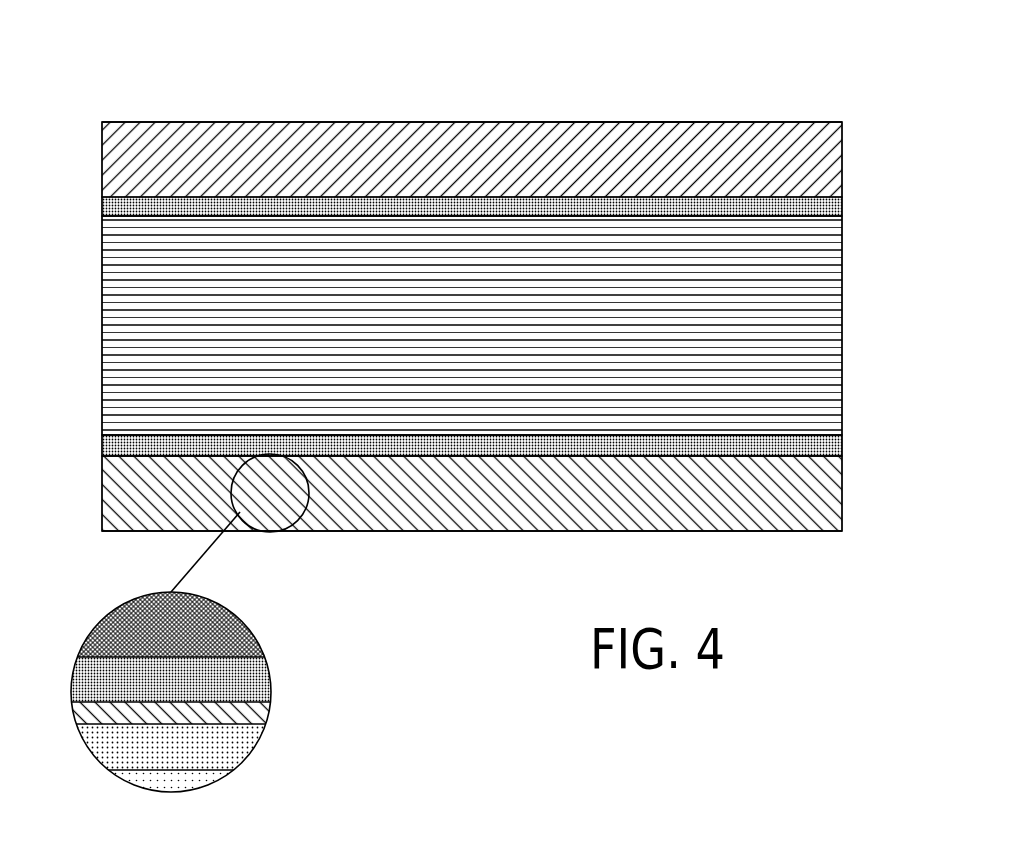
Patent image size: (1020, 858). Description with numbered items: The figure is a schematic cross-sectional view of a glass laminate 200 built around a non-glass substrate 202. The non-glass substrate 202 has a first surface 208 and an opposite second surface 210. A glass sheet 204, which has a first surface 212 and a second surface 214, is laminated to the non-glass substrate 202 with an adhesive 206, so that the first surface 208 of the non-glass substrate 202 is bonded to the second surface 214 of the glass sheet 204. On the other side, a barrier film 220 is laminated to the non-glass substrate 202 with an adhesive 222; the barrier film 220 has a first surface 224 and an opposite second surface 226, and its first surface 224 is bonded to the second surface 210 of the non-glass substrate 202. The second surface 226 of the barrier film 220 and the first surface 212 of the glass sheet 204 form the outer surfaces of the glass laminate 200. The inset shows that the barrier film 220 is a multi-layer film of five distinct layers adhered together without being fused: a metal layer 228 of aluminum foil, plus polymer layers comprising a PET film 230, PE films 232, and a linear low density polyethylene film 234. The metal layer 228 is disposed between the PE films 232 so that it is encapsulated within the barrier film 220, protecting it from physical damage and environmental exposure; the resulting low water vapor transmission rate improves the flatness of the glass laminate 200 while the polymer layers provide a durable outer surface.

The glass laminate 200 is at (450, 266).
The non-glass substrate 202 is at (425, 325).
The glass sheet 204 is at (425, 156).
The adhesive 206 is at (422, 188).
The first surface 208 is at (644, 93).
The second surface 210 is at (472, 529).
The first surface 212 is at (492, 72).
The second surface 214 is at (501, 242).
The barrier film 220 is at (425, 493).
The adhesive 222 is at (423, 427).
The first surface 224 is at (514, 401).
The second surface 226 is at (507, 564).
The metal layer 228 is at (250, 737).
The PET film 230 is at (213, 804).
The PE films 232 is at (250, 718).
The linear low density polyethylene (LLDPE) film 234 is at (235, 621).